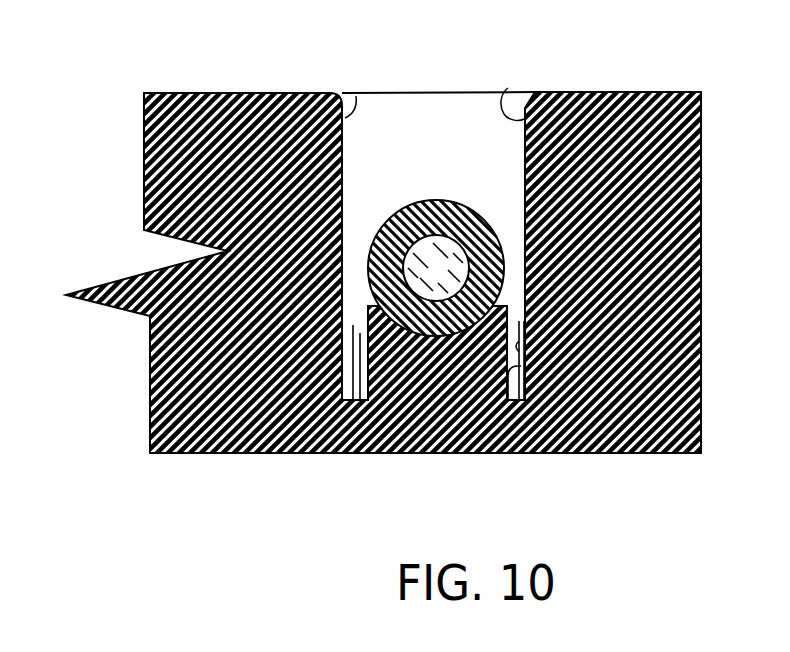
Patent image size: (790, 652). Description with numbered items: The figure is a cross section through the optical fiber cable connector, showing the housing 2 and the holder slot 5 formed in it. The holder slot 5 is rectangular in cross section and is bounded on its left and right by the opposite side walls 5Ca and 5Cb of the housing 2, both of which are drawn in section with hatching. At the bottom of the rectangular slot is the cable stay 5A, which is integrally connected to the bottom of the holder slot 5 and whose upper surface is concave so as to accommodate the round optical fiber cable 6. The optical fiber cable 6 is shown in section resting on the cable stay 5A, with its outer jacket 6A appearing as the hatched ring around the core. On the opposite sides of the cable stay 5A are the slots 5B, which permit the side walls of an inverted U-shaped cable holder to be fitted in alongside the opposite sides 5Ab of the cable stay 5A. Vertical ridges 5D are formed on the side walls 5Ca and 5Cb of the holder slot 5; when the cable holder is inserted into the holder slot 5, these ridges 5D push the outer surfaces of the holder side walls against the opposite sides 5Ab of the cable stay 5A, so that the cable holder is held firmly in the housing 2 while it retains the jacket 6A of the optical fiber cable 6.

The housing 2 is at (167, 85).
The holder slot 5 is at (372, 85).
The side wall of holder slot 5Ca is at (348, 88).
The side wall of holder slot 5Cb is at (500, 80).
The cable stay 5A is at (441, 357).
The opposite sides of cable stay 5Ab is at (500, 392).
The slots 5B is at (352, 393).
The vertical ridges 5D is at (515, 345).
The optical fiber cable 6 is at (406, 194).
The jacket 6A is at (462, 205).